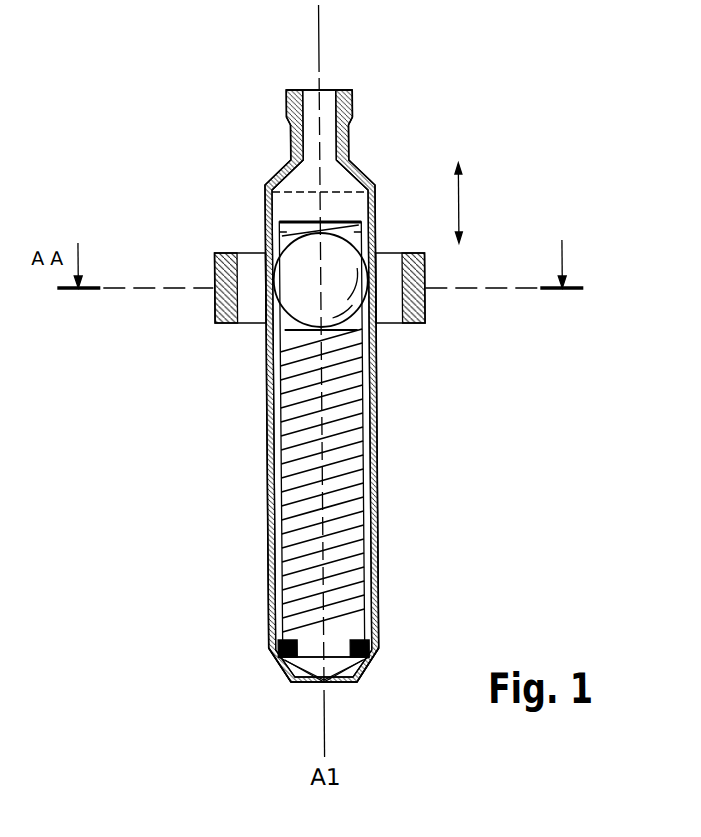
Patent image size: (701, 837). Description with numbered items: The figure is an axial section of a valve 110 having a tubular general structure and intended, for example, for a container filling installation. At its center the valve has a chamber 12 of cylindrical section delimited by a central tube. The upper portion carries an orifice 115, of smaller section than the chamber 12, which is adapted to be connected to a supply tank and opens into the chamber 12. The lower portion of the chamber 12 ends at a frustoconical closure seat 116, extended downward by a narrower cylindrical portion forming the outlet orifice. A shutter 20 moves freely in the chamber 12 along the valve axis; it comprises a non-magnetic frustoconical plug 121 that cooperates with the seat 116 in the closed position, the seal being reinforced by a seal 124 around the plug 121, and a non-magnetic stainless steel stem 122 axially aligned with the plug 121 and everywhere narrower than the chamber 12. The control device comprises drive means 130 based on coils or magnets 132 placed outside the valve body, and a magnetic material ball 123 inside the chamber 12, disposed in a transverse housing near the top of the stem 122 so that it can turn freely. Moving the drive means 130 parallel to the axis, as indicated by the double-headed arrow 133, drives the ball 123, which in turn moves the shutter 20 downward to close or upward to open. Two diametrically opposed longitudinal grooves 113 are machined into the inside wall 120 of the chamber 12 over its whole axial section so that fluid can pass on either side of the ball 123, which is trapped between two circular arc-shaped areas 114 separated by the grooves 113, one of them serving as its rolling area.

The valve 110 is at (377, 103).
The circular arc-shaped areas 114 is at (275, 422).
The orifice 115 is at (302, 88).
The chamber 12 is at (370, 183).
The longitudinal groove 113 is at (343, 204).
The inside wall 120 is at (375, 396).
The ball 123 is at (290, 242).
The stem 122 is at (355, 465).
The shutter 20 is at (363, 557).
The seal 124 is at (300, 327).
The plug 121 is at (328, 682).
The closure seat 116 is at (283, 672).
The drive means 130 is at (213, 273).
The coils or magnets 132 is at (409, 259).
The double-headed arrow 133 is at (458, 203).